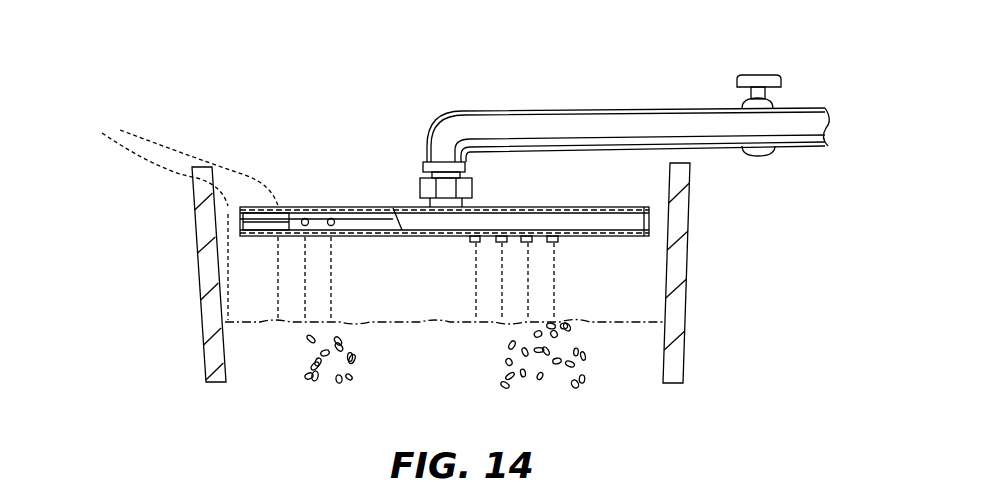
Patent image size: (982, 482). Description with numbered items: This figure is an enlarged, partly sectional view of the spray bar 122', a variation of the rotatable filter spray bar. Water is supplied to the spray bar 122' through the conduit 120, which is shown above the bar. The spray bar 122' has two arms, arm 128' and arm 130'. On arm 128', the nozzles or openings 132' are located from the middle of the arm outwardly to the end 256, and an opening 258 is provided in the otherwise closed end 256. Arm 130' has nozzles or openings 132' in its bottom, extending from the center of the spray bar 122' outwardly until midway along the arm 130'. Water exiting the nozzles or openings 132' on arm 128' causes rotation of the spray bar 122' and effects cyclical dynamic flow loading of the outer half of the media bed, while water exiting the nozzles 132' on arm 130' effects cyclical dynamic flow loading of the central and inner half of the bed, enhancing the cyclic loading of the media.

The conduit 120 is at (578, 118).
The arm 130' is at (453, 152).
The arm 128' is at (400, 140).
The spray bar 122' is at (316, 154).
The nozzles or openings 132' is at (361, 211).
The opening 258 is at (240, 228).
The end 256 is at (230, 240).